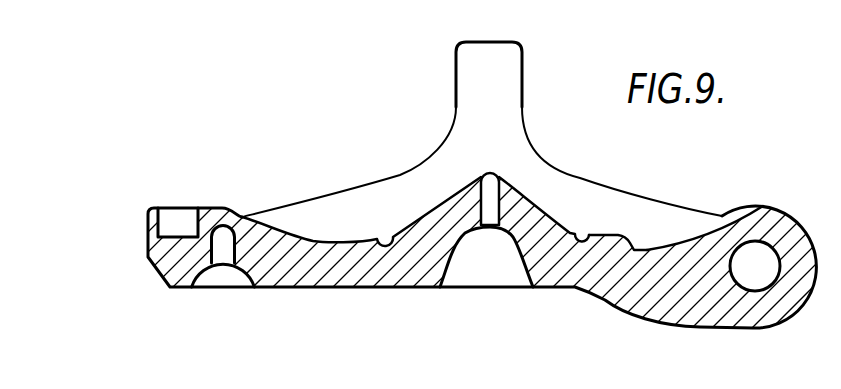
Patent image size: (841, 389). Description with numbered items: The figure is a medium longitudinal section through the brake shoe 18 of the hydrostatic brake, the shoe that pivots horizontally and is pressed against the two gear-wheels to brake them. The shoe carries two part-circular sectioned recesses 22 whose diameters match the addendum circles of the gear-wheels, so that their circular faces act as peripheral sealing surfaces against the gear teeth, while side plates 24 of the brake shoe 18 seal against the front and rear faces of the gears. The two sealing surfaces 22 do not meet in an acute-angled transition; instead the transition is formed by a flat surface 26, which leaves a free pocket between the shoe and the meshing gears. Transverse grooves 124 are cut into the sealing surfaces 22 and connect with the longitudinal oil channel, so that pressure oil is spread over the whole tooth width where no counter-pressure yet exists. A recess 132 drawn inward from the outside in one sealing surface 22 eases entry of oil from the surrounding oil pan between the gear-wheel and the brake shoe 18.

The brake shoe 18 is at (652, 195).
The part-circular sectioned recesses 22 is at (440, 210).
The side plates 24 is at (523, 73).
The flat surface 26 is at (493, 177).
The transverse grooves 124 is at (385, 237).
The recess 132 is at (702, 227).